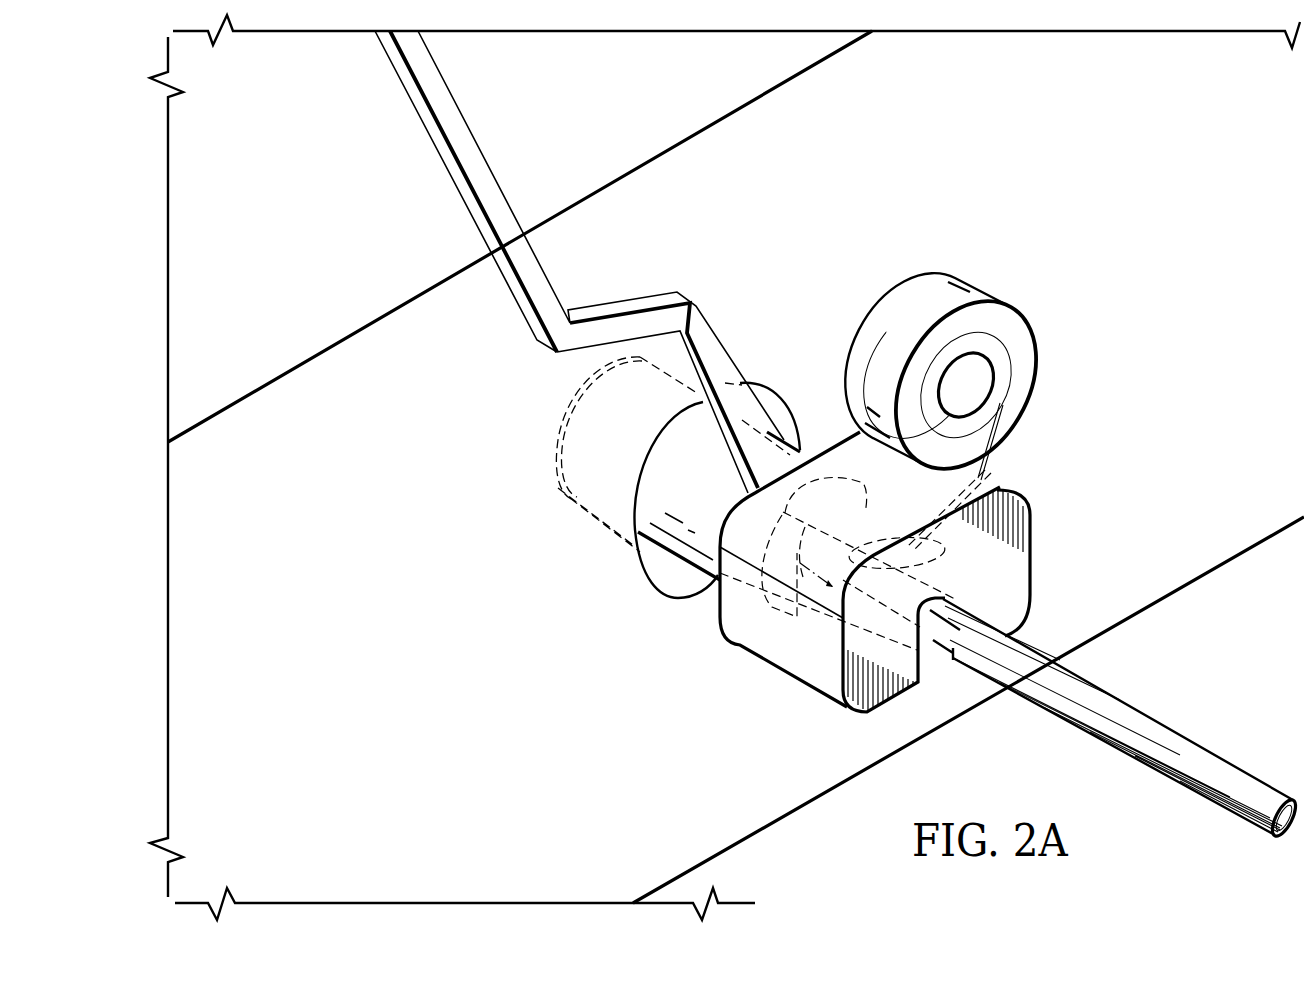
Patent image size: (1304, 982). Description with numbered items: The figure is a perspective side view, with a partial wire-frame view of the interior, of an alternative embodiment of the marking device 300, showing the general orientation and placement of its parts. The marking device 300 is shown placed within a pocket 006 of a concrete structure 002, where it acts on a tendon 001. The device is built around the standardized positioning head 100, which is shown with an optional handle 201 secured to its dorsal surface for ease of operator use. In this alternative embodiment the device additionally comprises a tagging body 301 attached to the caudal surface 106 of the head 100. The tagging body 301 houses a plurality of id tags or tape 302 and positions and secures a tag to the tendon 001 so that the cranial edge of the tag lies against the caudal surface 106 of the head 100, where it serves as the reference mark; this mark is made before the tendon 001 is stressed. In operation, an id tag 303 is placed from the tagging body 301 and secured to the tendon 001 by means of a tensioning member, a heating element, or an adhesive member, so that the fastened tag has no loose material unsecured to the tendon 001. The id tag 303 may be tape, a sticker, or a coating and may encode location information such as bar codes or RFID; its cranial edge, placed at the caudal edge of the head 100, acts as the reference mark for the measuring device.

The tendon 001 is at (1190, 743).
The concrete structure 002 is at (1200, 180).
The pocket 006 is at (607, 542).
The standardized positioning head 100 is at (683, 468).
The caudal surface of the head 106 is at (782, 612).
The handle 201 is at (422, 122).
The marking device 300 is at (856, 561).
The tagging body 301 is at (1033, 585).
The id tags or tape 302 is at (1012, 365).
The id tag 303 is at (930, 566).